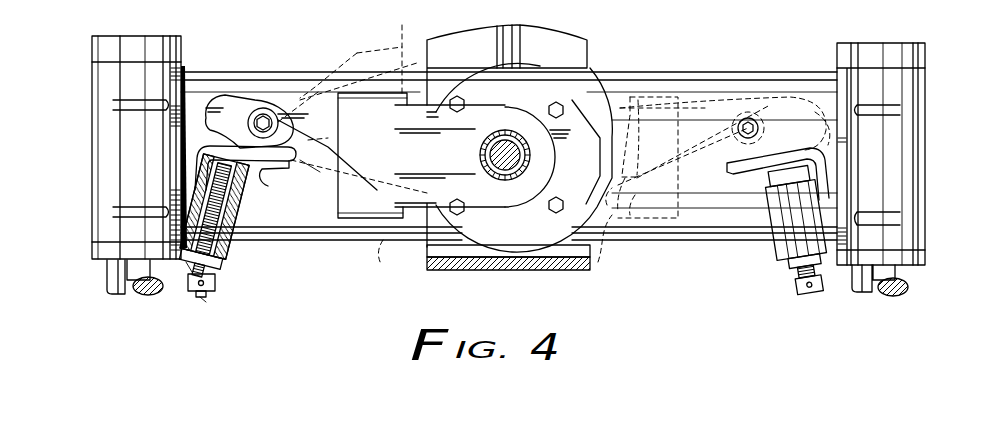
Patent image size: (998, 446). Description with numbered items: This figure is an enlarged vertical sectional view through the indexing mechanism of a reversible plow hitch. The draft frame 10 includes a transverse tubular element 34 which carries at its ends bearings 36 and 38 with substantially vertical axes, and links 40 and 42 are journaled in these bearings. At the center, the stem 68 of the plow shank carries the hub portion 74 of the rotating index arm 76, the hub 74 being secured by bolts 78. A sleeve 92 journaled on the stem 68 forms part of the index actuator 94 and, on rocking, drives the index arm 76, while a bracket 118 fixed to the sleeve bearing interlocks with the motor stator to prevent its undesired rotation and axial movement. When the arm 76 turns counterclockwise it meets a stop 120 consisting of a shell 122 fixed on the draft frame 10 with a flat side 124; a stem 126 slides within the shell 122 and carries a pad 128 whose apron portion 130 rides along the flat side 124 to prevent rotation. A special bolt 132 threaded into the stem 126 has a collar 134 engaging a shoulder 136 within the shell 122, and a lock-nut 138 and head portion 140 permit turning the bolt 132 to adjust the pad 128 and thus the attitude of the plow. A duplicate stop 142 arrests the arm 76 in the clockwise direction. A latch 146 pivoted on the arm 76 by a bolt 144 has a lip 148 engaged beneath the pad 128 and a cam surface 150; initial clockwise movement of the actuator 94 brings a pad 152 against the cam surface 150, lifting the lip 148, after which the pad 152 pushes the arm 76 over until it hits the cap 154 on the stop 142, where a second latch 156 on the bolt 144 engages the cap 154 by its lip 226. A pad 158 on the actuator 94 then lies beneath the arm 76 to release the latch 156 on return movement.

The draft frame 10 is at (509, 123).
The transverse tubular element 34 is at (720, 70).
The bearing 36 is at (97, 78).
The bearing 38 is at (925, 85).
The link 40 is at (110, 282).
The link 42 is at (853, 278).
The stem 68 is at (481, 162).
The hub portion 74 is at (503, 155).
The index arm 76 is at (235, 112).
The bolts 78 is at (552, 102).
The sleeve 92 is at (530, 160).
The index actuator 94 is at (345, 188).
The bracket 118 is at (443, 268).
The stop 120 is at (184, 148).
The shell 122 is at (237, 250).
The flat side 124 is at (184, 272).
The stem 126 is at (258, 180).
The pad 128 is at (242, 118).
The apron portion 130 is at (185, 167).
The special bolt 132 is at (212, 283).
The collar 134 is at (216, 258).
The shoulder 136 is at (186, 270).
The lock-nut 138 is at (178, 240).
The head portion 140 is at (205, 300).
The stop 142 is at (823, 143).
The bolt 144 is at (266, 117).
The latch 146 is at (282, 117).
The lip 148 is at (265, 186).
The cam surface 150 is at (326, 178).
The pad 152 is at (389, 258).
The cap 154 is at (730, 172).
The latch 156 is at (622, 257).
The pad 158 is at (402, 47).
The lip 226 is at (735, 170).